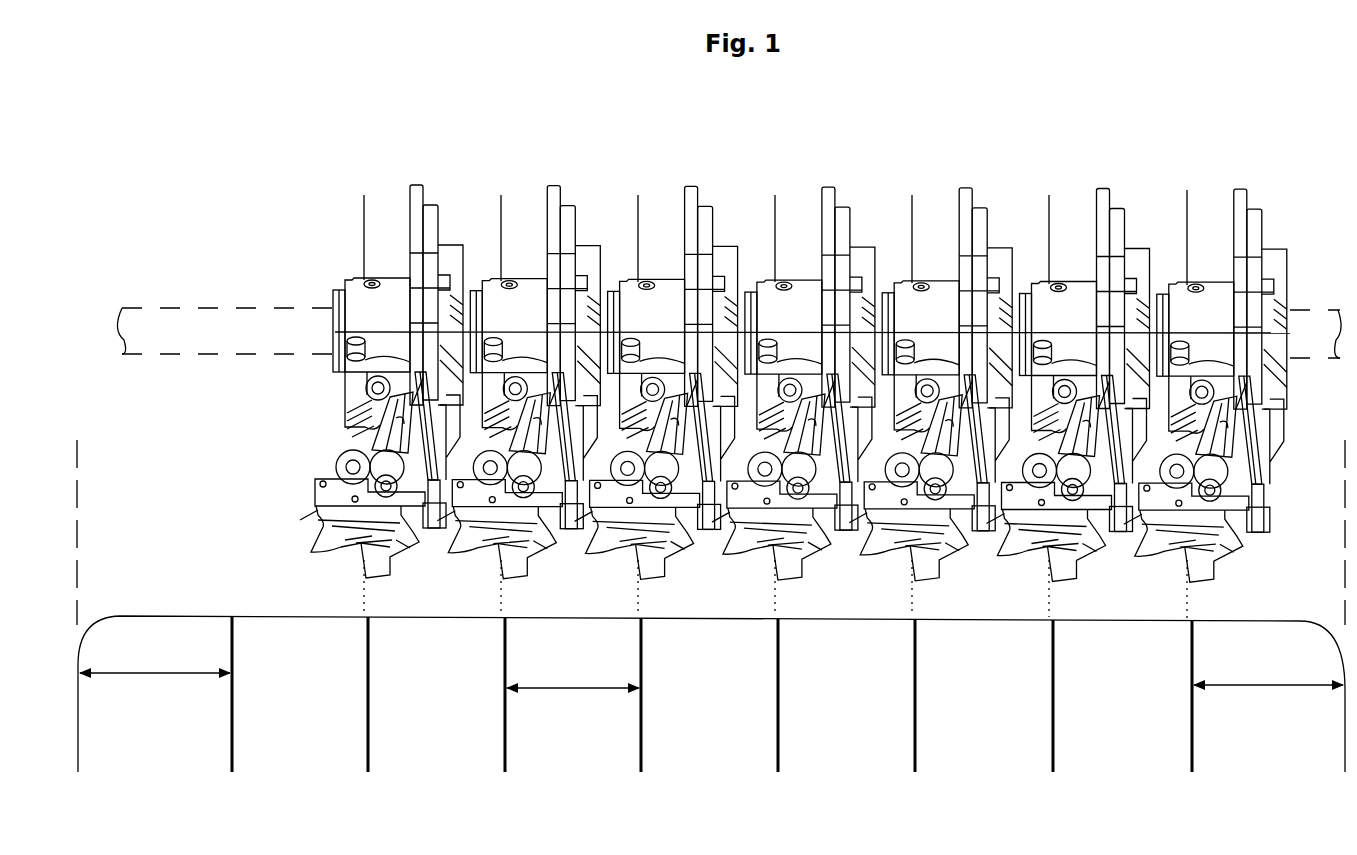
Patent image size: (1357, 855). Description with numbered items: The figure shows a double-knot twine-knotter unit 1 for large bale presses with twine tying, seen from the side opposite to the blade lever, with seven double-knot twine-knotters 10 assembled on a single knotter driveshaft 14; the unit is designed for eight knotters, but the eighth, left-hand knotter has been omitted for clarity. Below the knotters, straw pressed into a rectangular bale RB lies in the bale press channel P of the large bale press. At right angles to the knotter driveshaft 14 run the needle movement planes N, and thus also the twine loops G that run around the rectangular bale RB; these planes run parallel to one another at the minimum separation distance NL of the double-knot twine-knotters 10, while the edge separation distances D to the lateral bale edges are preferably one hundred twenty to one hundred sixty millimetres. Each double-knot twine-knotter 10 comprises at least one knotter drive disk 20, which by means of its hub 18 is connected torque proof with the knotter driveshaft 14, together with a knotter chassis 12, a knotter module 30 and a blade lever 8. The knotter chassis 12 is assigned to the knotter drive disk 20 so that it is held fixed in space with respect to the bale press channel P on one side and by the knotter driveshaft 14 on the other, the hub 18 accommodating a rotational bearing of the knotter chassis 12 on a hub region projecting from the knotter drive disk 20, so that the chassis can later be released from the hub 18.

The seed drill / sowing machine 1 is at (1262, 134).
The furrow opener shoe 8 is at (320, 522).
The double-knot twine-knotter 10 is at (565, 170).
The knotter chassis 12 is at (333, 388).
The knotter driveshaft 14 is at (216, 308).
The hub 18 is at (333, 300).
The knotter drive disk 20 is at (410, 205).
The knotter module 30 is at (283, 498).
The needle movement plane N is at (775, 225).
The bale press channel P is at (78, 500).
The rectangular bale RB is at (1300, 626).
The twine loop G is at (232, 694).
The edge separation distance D is at (158, 672).
The minimum separation distance NL is at (573, 671).